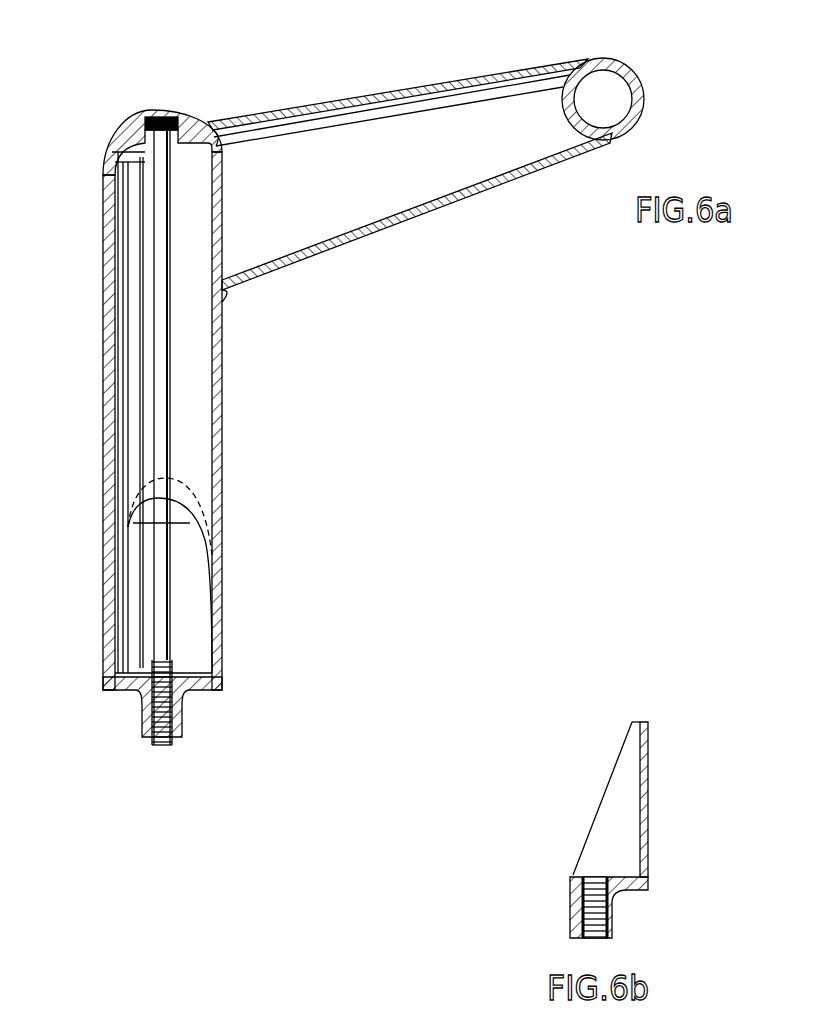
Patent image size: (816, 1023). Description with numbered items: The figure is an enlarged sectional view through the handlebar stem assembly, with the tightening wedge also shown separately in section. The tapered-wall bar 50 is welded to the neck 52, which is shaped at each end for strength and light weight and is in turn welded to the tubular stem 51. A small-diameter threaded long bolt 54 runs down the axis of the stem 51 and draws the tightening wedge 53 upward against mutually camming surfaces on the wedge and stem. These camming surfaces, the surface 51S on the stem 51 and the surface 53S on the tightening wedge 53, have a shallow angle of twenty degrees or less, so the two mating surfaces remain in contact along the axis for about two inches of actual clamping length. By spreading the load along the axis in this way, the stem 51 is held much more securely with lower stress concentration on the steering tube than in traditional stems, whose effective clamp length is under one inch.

In FIG. 6A, the bar 50 is at (614, 61).
In FIG. 6A, the stem 51 is at (104, 333).
In FIG. 6A, the camming surface 51S is at (223, 493).
In FIG. 6A, the neck 52 is at (373, 97).
In FIG. 6A, the tightening wedge 53 is at (220, 678).
In FIG. 6B, the tightening wedge 53 is at (652, 865).
In FIG. 6A, the camming surface 53S is at (220, 623).
In FIG. 6B, the camming surface 53S is at (602, 798).
In FIG. 6A, the threaded long bolt 54 is at (166, 115).